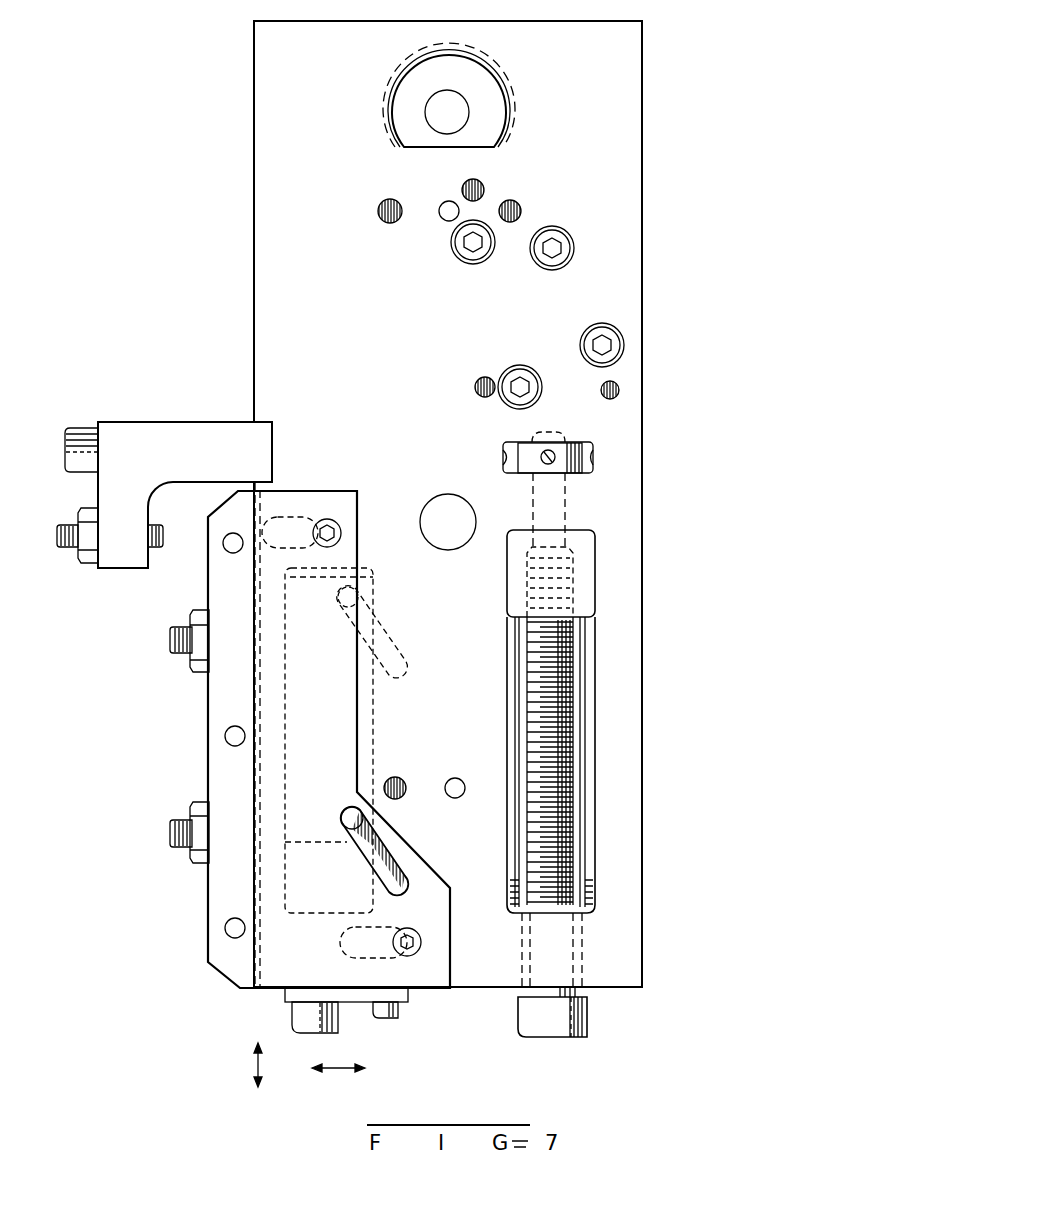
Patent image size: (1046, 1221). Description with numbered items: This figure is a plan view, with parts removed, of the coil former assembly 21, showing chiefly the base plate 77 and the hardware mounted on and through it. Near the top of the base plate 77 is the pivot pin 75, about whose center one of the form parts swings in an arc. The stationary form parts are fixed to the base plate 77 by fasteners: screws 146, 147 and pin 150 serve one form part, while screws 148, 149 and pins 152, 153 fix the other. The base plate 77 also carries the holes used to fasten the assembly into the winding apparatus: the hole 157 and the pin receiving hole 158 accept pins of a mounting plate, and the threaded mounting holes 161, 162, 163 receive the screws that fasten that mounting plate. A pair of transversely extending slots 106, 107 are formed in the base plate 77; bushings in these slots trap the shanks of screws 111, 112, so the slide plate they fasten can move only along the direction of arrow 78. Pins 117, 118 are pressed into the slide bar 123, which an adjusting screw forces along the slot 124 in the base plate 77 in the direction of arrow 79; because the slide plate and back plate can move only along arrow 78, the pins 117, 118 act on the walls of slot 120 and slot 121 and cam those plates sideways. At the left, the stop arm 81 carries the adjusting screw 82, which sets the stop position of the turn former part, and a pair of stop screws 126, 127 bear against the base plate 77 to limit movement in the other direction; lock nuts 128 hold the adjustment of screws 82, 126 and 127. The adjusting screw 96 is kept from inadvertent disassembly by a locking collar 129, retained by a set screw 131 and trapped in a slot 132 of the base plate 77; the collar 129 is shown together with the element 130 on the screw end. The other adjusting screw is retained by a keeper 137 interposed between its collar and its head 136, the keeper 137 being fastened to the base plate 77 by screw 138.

The coil former assembly 21 is at (645, 177).
The pivot pin 75 is at (460, 123).
The base plate 77 is at (336, 134).
The arrow 78 is at (338, 1080).
The arrow 79 is at (273, 1065).
The stop arm 81 is at (186, 465).
The adjusting screw 82 is at (65, 547).
The adjusting screw 96 is at (590, 1022).
The slot 106 is at (292, 517).
The slot 107 is at (360, 958).
The screw 111 is at (337, 527).
The screw 112 is at (412, 937).
The pin 117 is at (348, 808).
The pin 118 is at (340, 600).
The slot 120 is at (393, 632).
The slot 121 is at (398, 865).
The slide bar 123 is at (362, 698).
The slot 124 is at (287, 862).
The screw 126 is at (183, 652).
The screw 127 is at (182, 848).
The lock nut 128 is at (90, 508).
The locking collar 129 is at (590, 457).
The nut 130 is at (560, 432).
The set screw 131 is at (543, 452).
The slot 132 is at (503, 457).
The head 136 is at (300, 1013).
The keeper 137 is at (408, 995).
The screw 138 is at (395, 1018).
The screw 146 is at (473, 258).
The screw 147 is at (563, 267).
The screw 148 is at (537, 370).
The screw 149 is at (608, 326).
The pin 150 is at (481, 183).
The pin 152 is at (484, 376).
The pin 153 is at (620, 388).
The hole 157 is at (456, 778).
The pin receiving hole 158 is at (448, 222).
The threaded mounting hole 161 is at (394, 777).
The threaded mounting hole 162 is at (388, 199).
The threaded mounting hole 163 is at (521, 207).